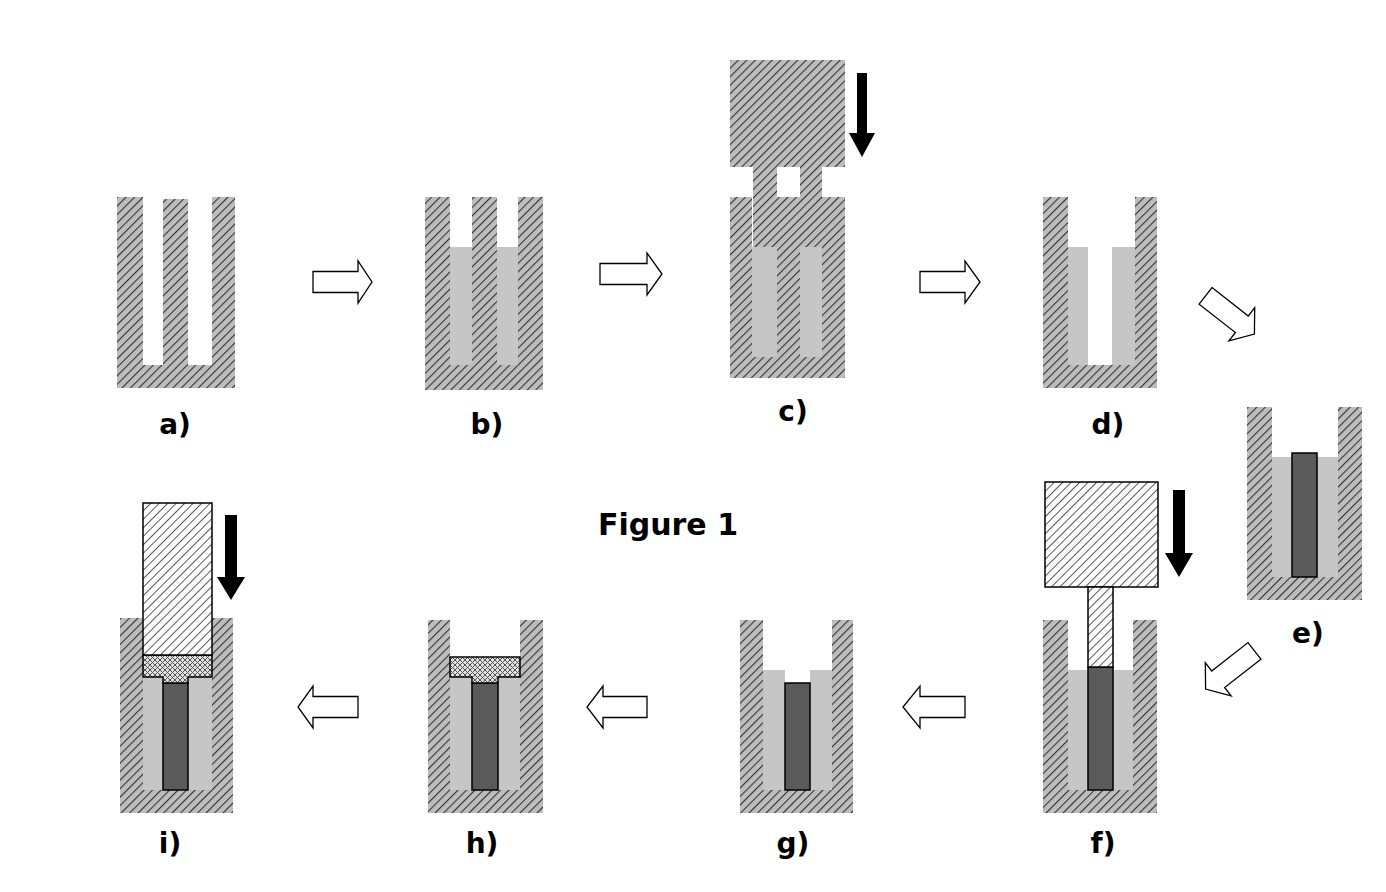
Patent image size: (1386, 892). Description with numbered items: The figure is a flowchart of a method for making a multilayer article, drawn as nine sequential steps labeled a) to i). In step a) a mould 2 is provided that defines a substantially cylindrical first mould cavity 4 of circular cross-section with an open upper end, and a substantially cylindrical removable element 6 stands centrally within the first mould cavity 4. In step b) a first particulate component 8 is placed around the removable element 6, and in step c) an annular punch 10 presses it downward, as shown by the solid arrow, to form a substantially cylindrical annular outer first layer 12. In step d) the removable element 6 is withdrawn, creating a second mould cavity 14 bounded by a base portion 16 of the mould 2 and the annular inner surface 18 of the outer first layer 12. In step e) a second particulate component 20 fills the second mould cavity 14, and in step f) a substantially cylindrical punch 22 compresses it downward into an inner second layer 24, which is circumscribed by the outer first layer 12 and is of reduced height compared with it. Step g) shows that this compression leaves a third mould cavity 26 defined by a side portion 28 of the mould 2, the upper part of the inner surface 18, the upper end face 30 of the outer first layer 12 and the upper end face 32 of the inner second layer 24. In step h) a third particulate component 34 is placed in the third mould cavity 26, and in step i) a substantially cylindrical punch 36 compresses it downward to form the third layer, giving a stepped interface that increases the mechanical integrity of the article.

The mould 2 is at (245, 237).
The first mould cavity 4 is at (200, 305).
The removable element 6 is at (173, 225).
The first particulate component 8 is at (502, 260).
The annular punch 10 is at (797, 88).
The annular outer first layer 12 is at (1123, 290).
The second mould cavity 14 is at (1100, 288).
The base portion 16 is at (1100, 363).
The annular inner surface 18 is at (1087, 305).
The second particulate component 20 is at (1303, 468).
The cylindrical punch 22 is at (1092, 560).
The inner second layer 24 is at (798, 753).
The third mould cavity 26 is at (798, 662).
The side portion 28 is at (832, 662).
The upper end face 30 is at (818, 670).
The upper end face 32 is at (798, 683).
The third particulate component 34 is at (482, 668).
The cylindrical punch 36 is at (172, 538).